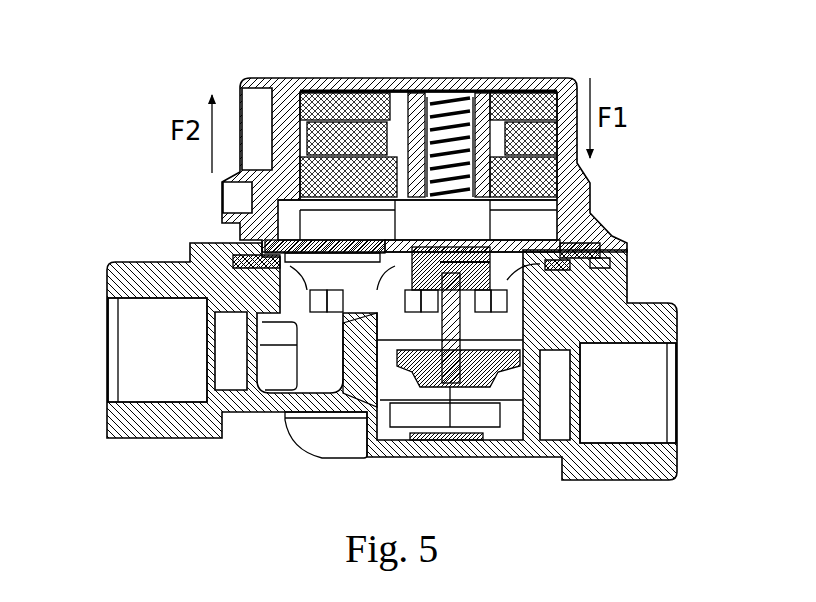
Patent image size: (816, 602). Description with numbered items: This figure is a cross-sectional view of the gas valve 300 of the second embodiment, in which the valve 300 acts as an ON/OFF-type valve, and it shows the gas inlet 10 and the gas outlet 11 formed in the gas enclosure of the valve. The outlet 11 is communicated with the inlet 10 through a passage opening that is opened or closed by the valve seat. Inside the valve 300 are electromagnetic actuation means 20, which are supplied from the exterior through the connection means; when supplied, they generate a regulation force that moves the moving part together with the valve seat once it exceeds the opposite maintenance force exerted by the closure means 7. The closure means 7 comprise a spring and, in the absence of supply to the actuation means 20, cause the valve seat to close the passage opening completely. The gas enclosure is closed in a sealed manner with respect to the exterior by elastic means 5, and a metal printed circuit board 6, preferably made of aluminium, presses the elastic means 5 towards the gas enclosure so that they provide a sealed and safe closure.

The gas valve 300 is at (224, 77).
The closure means 7 is at (433, 97).
The actuation means 20 is at (372, 209).
The elastic means 5 is at (597, 257).
The metal printed circuit board 6 is at (540, 263).
The gas outlet 11 is at (130, 351).
The gas inlet 10 is at (655, 404).